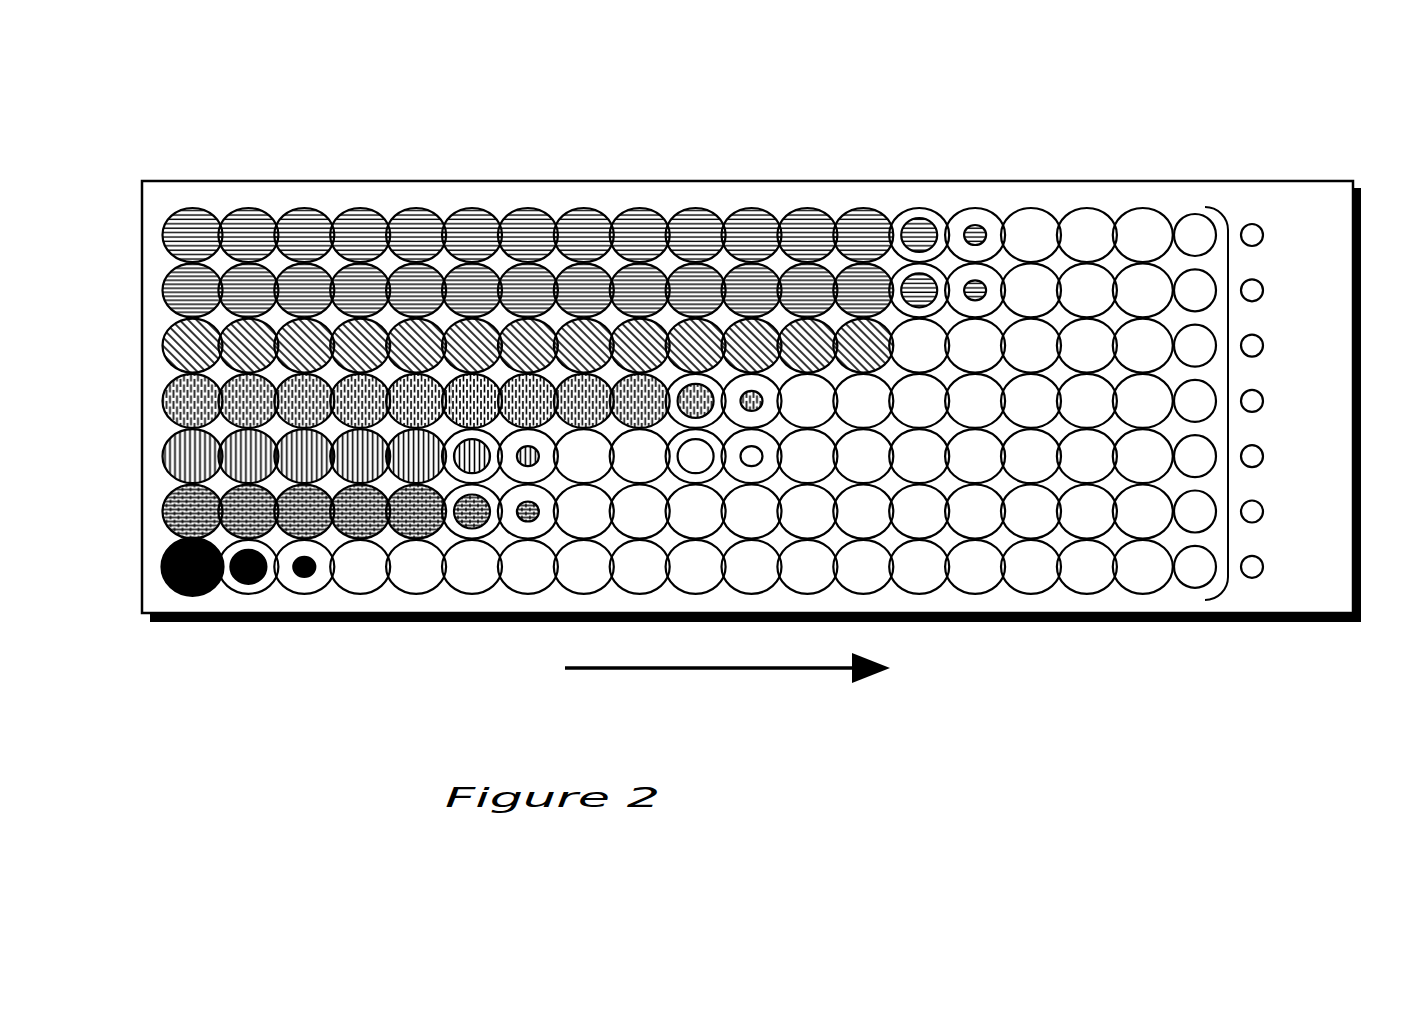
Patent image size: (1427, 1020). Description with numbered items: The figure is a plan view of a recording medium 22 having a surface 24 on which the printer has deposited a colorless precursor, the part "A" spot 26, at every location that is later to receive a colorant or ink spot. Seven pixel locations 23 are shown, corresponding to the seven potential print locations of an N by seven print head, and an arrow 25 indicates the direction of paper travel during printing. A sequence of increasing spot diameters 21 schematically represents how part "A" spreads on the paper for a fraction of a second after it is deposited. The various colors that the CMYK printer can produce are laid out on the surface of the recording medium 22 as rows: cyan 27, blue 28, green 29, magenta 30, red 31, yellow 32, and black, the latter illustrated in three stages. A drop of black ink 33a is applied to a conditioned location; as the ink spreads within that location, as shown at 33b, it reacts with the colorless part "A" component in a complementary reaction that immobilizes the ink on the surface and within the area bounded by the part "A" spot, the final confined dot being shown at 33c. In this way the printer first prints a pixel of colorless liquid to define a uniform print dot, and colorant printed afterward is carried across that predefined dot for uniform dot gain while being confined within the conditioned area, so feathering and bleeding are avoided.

The sequence of increasing spot diameters 21 is at (973, 207).
The recording medium 22 is at (400, 152).
The pixel locations 23 is at (1277, 220).
The surface 24 is at (1292, 205).
The arrow 25 is at (687, 670).
The part "A" spot 26 is at (1228, 590).
The cyan 27 is at (165, 240).
The blue 28 is at (165, 295).
The green 29 is at (165, 353).
The magenta 30 is at (165, 410).
The red 31 is at (165, 467).
The yellow 32 is at (165, 523).
The drop of black ink 33a is at (312, 587).
The spreading black ink 33b is at (240, 587).
The immobilized black ink 33c is at (165, 577).